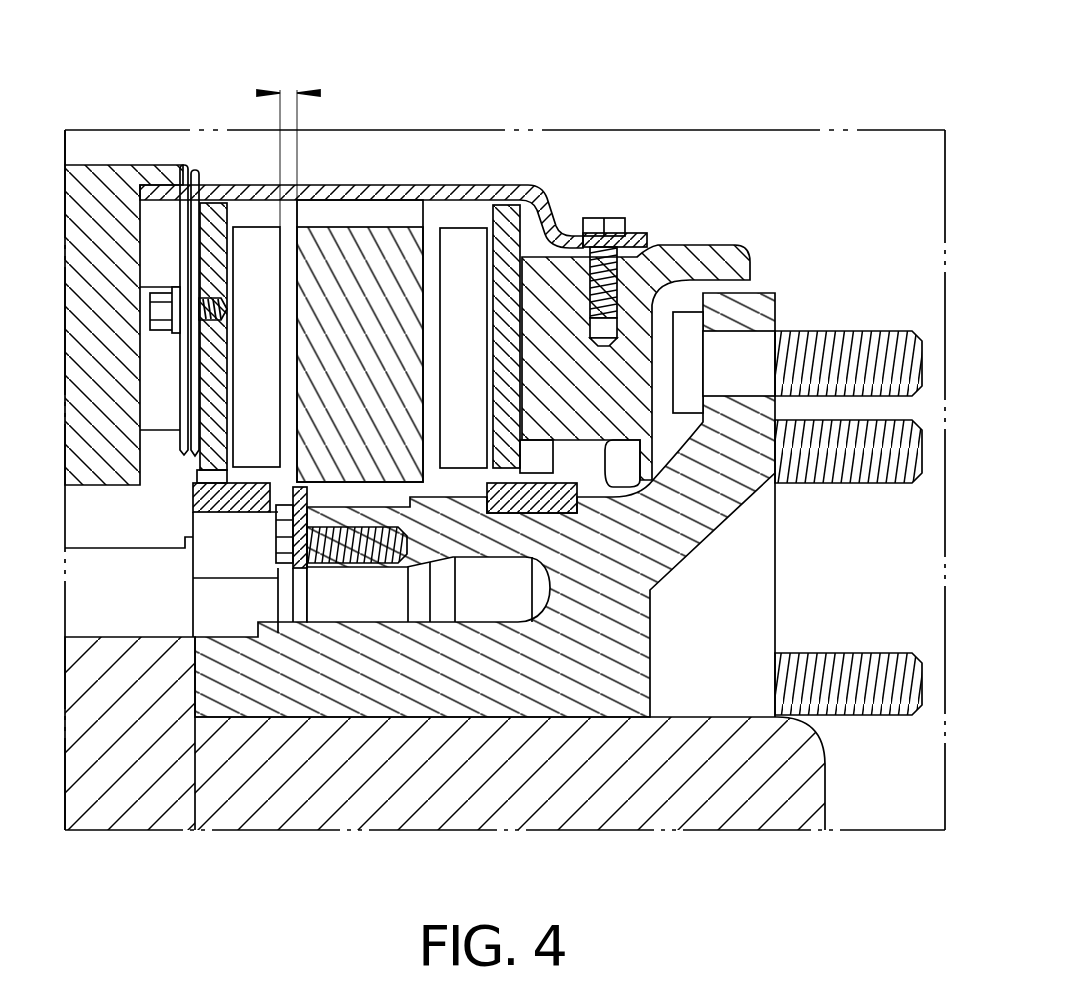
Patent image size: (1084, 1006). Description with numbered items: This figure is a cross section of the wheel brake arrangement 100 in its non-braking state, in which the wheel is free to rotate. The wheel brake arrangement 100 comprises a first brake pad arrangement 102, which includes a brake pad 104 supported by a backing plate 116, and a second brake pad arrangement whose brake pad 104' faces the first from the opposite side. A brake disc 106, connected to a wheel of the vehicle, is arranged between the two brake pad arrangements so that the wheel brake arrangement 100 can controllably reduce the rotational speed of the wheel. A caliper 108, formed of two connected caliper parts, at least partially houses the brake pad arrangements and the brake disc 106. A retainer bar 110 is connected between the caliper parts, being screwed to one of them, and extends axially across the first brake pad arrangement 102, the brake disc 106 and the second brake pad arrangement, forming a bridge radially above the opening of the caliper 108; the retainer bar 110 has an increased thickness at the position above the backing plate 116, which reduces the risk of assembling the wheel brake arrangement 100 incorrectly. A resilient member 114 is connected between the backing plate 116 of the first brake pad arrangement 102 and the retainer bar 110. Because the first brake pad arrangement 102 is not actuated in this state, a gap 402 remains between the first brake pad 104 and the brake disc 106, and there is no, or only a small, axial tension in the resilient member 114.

The wheel brake arrangement 100 is at (832, 85).
The first brake pad arrangement 102 is at (179, 475).
The brake pad 104 is at (217, 257).
The brake pad 104' is at (496, 271).
The brake disc 106 is at (355, 257).
The caliper 108 is at (103, 146).
The retainer bar 110 is at (338, 185).
The resilient member 114 is at (152, 148).
The backing plate 116 is at (215, 252).
The gap 402 is at (288, 90).